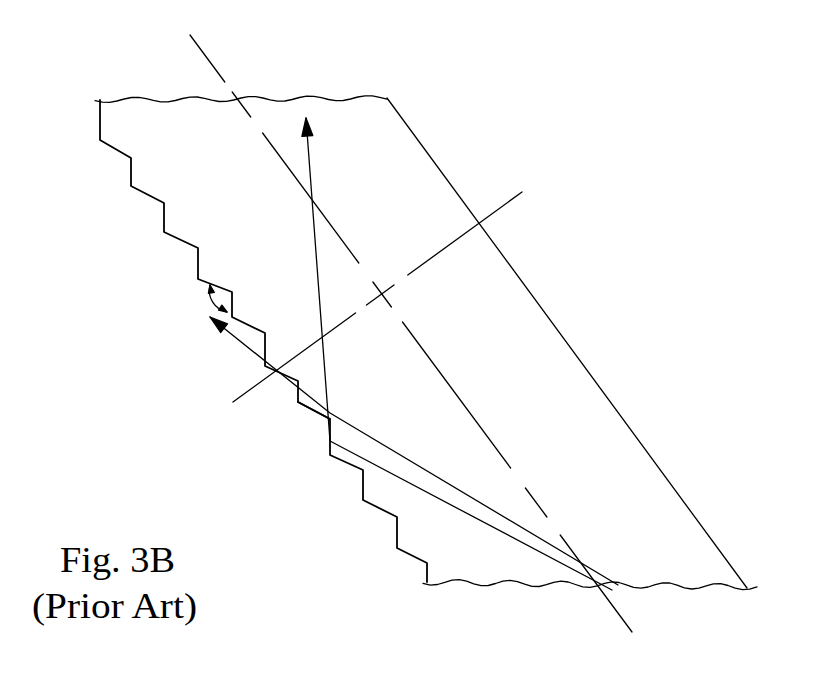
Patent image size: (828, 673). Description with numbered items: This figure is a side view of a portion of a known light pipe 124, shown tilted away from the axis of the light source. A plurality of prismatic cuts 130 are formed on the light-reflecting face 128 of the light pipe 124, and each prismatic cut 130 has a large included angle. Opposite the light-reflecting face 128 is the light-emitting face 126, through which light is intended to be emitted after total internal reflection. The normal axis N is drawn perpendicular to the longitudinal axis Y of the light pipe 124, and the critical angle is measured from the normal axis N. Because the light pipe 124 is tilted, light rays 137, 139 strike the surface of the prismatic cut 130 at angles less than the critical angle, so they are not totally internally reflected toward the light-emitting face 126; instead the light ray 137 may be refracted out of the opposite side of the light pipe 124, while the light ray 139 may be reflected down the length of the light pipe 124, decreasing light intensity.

The light pipe 124 is at (585, 142).
The light-emitting face 126 is at (432, 167).
The light-reflecting face 128 is at (163, 223).
The prismatic cut 130 is at (298, 402).
The light ray 137 is at (603, 575).
The light ray 139 is at (518, 547).
The longitudinal axis Y is at (210, 62).
The normal axis N is at (508, 202).